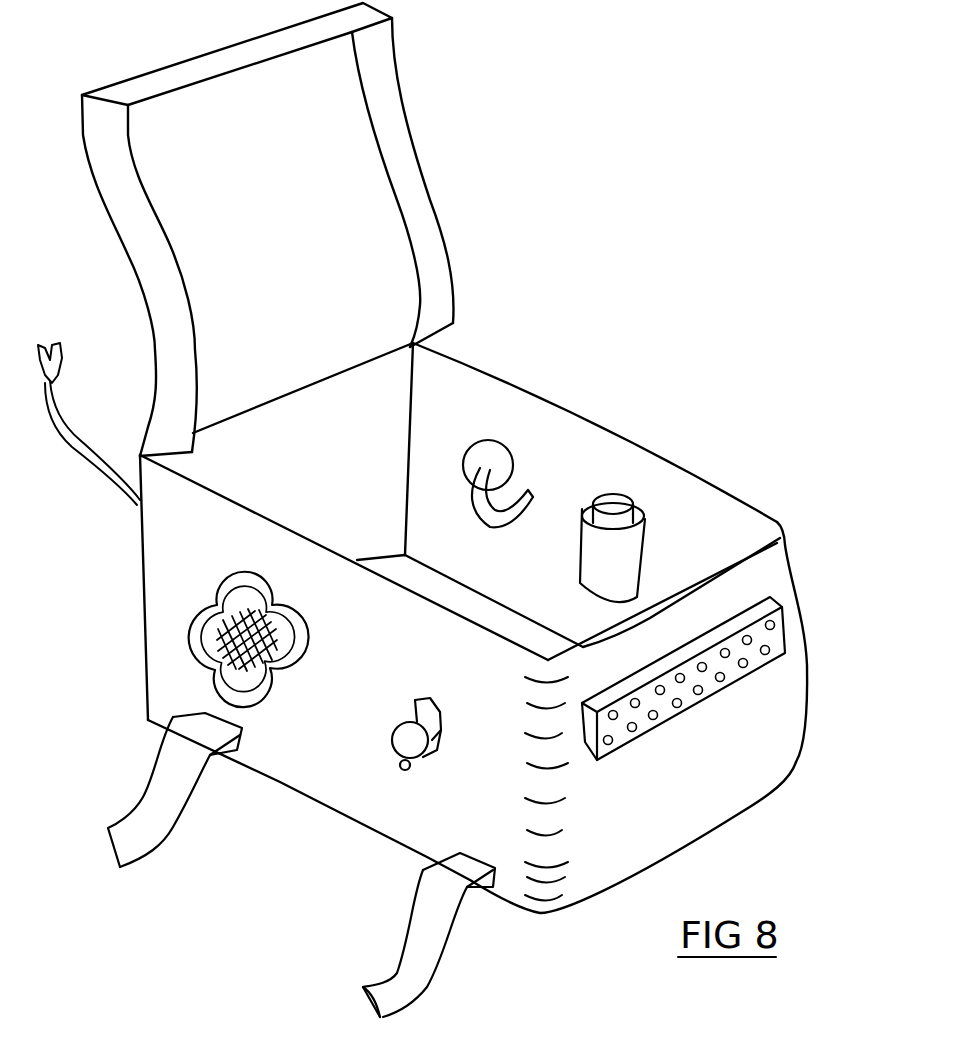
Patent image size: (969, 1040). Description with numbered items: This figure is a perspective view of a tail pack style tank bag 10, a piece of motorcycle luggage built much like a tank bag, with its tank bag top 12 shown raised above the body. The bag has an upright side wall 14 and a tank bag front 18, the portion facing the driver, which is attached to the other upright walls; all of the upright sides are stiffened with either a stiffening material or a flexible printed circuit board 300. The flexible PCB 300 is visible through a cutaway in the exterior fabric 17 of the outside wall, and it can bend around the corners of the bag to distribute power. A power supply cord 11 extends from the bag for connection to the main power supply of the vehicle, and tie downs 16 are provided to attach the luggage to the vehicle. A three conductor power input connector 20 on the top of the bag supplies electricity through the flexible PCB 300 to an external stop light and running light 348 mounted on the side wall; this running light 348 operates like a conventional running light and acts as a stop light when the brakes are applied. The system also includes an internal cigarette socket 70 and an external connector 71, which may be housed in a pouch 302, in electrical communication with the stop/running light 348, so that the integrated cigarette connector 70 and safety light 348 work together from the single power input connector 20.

The tank bag 10 is at (514, 366).
The power supply cord 11 is at (68, 422).
The tank bag top 12 is at (400, 158).
The tank bag upright side wall 14 is at (763, 512).
The tie downs 16 is at (425, 945).
The exterior fabric 17 is at (208, 581).
The tank bag front 18 is at (143, 620).
The power input connector 20 is at (500, 457).
The internal cigarette socket 70 is at (620, 494).
The external connector 71 is at (394, 724).
The flexible printed circuit board 300 is at (283, 678).
The pouch 302 is at (628, 548).
The running light 348 is at (770, 623).